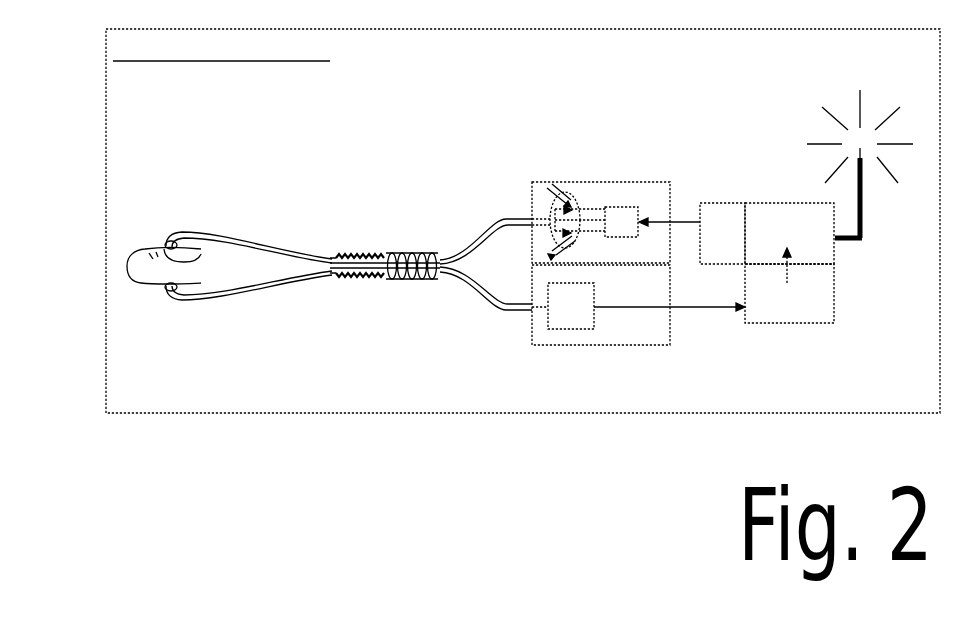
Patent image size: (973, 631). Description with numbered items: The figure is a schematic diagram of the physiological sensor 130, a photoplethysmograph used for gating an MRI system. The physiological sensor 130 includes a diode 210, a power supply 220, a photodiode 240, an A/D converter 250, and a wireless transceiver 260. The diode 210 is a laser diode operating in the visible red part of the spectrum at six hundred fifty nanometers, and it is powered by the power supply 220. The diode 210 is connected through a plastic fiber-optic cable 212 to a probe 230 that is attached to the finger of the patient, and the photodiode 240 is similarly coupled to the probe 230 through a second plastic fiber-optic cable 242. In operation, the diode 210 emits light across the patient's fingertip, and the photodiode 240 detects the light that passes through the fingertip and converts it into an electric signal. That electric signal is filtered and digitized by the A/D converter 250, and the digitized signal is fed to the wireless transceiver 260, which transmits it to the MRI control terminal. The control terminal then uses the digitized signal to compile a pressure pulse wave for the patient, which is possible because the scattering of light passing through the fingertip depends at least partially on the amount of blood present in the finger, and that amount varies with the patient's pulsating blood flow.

The physiological sensor 130 is at (105, 50).
The probe 230 is at (165, 288).
The plastic fiber-optic cable 212 is at (474, 240).
The plastic fiber-optic cable 242 is at (486, 294).
The diode 210 is at (532, 182).
The photodiode 240 is at (531, 346).
The power supply 220 is at (733, 203).
The A/D converter 250 is at (834, 312).
The wireless transceiver 260 is at (834, 249).